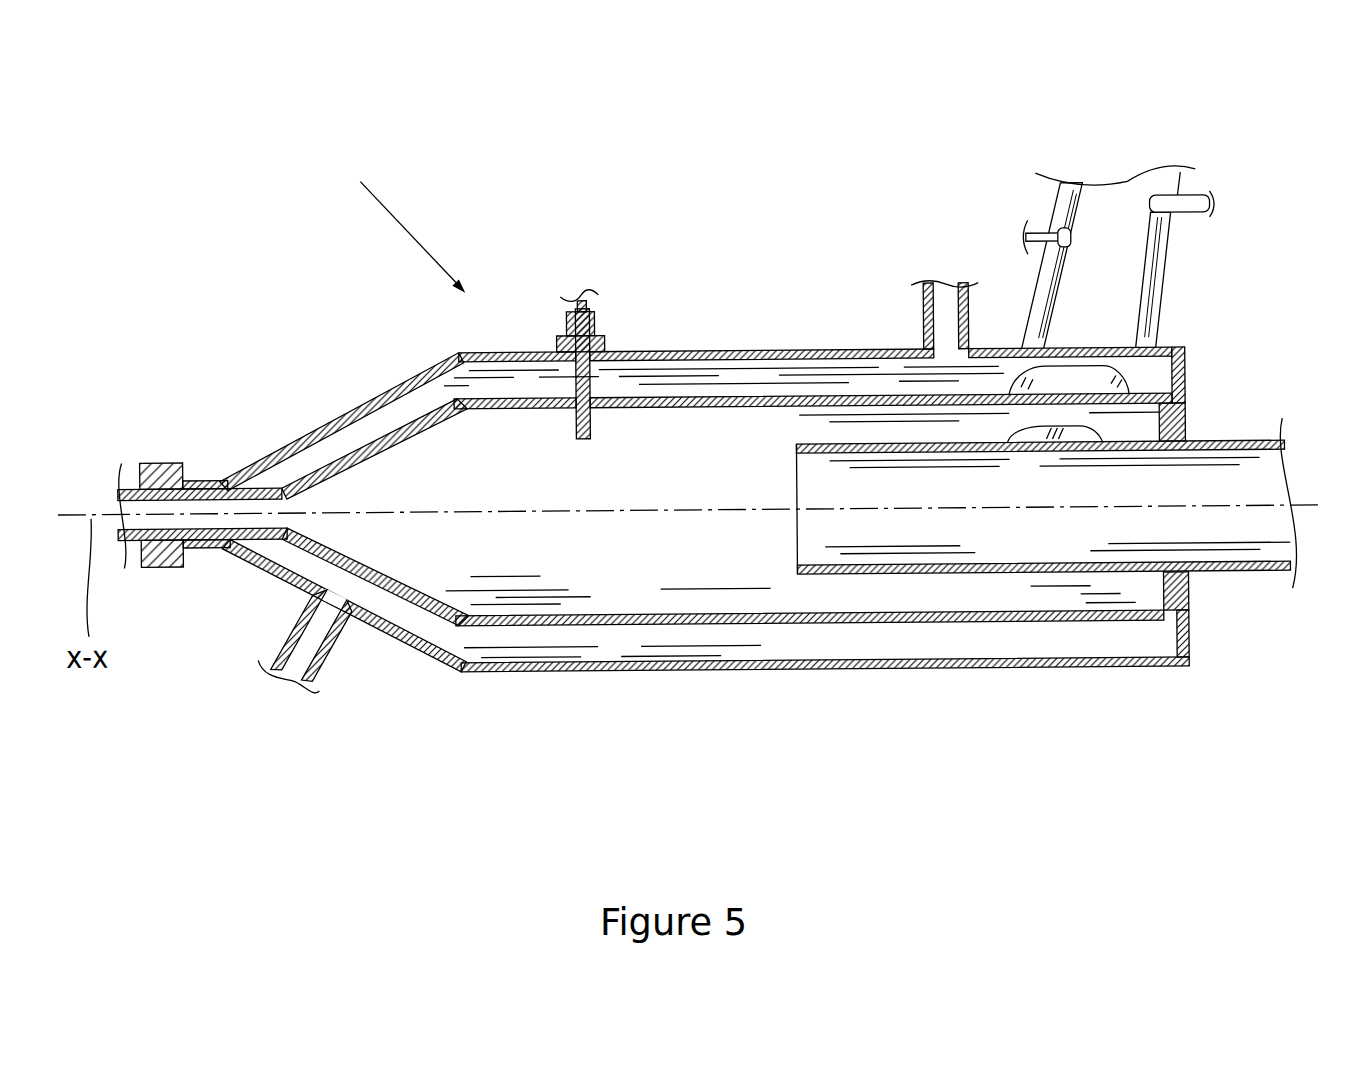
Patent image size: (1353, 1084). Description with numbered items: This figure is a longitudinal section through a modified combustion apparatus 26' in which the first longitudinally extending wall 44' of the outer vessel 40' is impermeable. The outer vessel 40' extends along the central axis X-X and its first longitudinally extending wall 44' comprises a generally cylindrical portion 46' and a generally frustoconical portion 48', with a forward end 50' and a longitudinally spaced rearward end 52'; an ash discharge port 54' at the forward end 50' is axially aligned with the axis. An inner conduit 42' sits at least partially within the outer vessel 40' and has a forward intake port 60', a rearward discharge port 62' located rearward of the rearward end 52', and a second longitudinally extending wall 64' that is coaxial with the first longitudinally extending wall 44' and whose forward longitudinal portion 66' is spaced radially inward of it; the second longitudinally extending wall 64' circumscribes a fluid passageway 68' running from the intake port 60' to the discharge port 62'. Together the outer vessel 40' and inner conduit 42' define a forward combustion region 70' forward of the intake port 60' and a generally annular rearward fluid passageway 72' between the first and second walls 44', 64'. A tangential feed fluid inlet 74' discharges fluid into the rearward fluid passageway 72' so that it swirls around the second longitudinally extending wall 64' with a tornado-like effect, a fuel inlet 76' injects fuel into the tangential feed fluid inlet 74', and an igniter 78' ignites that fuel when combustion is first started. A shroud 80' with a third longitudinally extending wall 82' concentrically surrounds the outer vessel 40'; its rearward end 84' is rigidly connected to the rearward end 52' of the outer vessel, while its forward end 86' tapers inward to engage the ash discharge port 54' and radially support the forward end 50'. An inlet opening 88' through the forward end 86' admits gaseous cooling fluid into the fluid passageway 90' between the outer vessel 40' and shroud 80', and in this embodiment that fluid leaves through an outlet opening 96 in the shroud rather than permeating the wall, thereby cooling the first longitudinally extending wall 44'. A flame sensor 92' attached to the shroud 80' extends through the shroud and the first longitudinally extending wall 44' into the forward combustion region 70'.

The combustion apparatus 26' is at (393, 222).
The flame sensor 92' is at (563, 332).
The shroud 80' is at (814, 275).
The outer vessel 40' is at (723, 283).
The generally cylindrical portion 46' is at (812, 330).
The fluid passageway 68' is at (1044, 377).
The rearward fluid passageway 72' is at (979, 337).
The outlet opening 96 is at (948, 330).
The igniter 78' is at (1024, 242).
The tangential feed fluid inlet 74' is at (1114, 118).
The fuel inlet 76' is at (1200, 242).
The rearward end 52' is at (1215, 386).
The rearward discharge port 62' is at (1074, 480).
The ash discharge port 54' is at (120, 504).
The forward end 50' is at (203, 468).
The generally frustoconical portion 48' is at (374, 429).
The first longitudinally extending wall 44' is at (341, 401).
The forward end 86' is at (337, 606).
The inlet opening 88' is at (286, 686).
The fluid passageway 90' is at (376, 657).
The forward combustion region 70' is at (609, 681).
The third longitudinally extending wall 82' is at (825, 703).
The forward intake port 60' is at (762, 599).
The inner conduit 42' is at (895, 660).
The forward longitudinal portion 66' is at (810, 660).
The second longitudinally extending wall 64' is at (1118, 642).
The rearward end 84' is at (1158, 657).